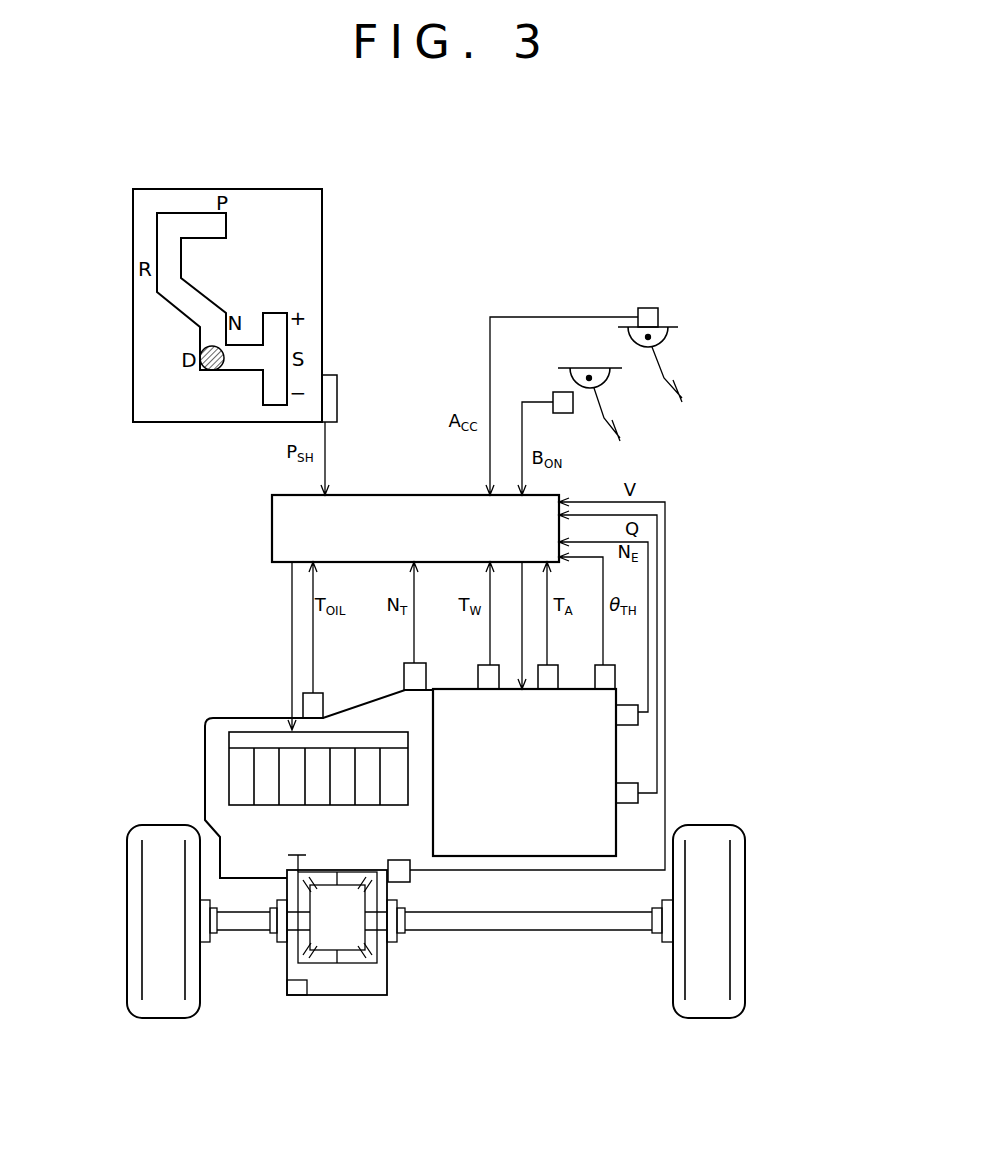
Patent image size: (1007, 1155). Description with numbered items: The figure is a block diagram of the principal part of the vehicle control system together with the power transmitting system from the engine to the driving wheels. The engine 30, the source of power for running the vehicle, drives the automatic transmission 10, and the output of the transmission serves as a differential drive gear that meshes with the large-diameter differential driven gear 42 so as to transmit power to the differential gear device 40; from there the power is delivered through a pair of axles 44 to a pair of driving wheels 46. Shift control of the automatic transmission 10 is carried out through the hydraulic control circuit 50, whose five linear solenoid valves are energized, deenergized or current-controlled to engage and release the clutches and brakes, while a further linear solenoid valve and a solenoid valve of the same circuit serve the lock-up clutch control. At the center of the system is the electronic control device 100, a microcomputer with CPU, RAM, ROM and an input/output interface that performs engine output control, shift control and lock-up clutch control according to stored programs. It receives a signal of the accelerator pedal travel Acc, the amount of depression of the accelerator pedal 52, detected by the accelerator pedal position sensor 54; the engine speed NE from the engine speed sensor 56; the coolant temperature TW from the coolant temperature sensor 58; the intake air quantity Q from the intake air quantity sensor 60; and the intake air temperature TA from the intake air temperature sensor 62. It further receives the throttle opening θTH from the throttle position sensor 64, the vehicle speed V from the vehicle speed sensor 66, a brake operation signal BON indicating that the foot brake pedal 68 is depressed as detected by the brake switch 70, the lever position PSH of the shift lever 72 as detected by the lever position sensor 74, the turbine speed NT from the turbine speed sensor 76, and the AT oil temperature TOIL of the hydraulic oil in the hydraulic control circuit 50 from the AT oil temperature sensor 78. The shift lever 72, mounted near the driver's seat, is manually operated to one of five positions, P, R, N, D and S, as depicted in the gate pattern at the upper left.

The automatic transmission 10 is at (210, 777).
The engine 30 is at (455, 703).
The differential gear device 40 is at (381, 980).
The differential driven gear 42 is at (305, 997).
The axles 44 is at (238, 922).
The driving wheels 46 is at (165, 833).
The hydraulic control circuit 50 is at (230, 740).
The accelerator pedal 52 is at (683, 395).
The accelerator pedal position sensor 54 is at (645, 308).
The engine speed sensor 56 is at (620, 725).
The coolant temperature sensor 58 is at (478, 682).
The intake air quantity sensor 60 is at (622, 803).
The intake air temperature sensor 62 is at (558, 682).
The throttle position sensor 64 is at (612, 683).
The vehicle speed sensor 66 is at (398, 882).
The foot brake pedal 68 is at (622, 432).
The brake switch 70 is at (562, 413).
The shift lever 72 is at (215, 370).
The lever position sensor 74 is at (330, 377).
The turbine speed sensor 76 is at (404, 675).
The AT oil temperature sensor 78 is at (323, 700).
The electronic control device 100 is at (368, 500).